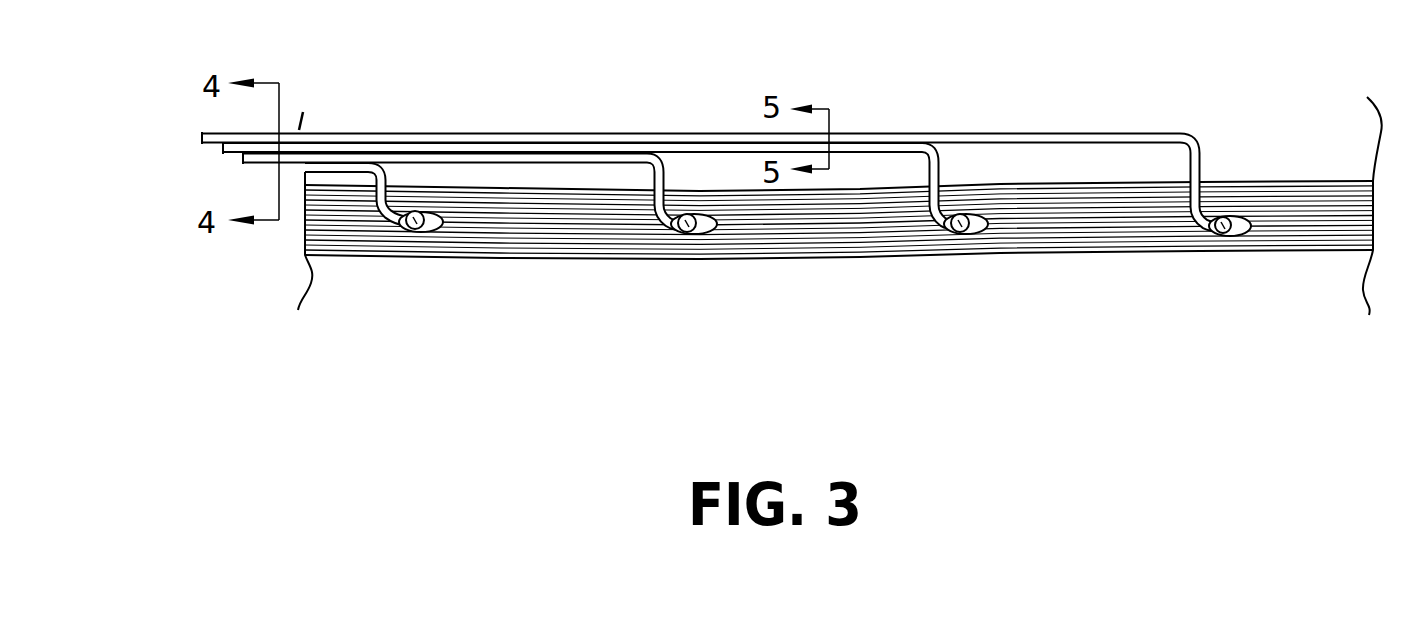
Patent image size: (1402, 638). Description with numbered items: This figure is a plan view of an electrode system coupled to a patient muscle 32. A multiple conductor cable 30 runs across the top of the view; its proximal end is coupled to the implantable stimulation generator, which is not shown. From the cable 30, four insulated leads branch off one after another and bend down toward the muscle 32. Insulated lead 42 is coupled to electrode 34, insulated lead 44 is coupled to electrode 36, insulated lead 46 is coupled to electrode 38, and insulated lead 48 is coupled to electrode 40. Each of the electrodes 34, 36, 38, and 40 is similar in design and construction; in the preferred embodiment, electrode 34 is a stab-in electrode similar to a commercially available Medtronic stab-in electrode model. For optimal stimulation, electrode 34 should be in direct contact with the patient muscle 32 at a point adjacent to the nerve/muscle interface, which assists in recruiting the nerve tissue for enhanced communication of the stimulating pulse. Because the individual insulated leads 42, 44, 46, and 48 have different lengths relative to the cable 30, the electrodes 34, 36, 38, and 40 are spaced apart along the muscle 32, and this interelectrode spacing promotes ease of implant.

The multiple conductor cable 30 is at (988, 89).
The patient muscle 32 is at (1325, 182).
The electrode 34 is at (428, 257).
The electrode 36 is at (693, 233).
The electrode 38 is at (970, 252).
The electrode 40 is at (1232, 248).
The insulated lead 42 is at (262, 173).
The insulated lead 44 is at (417, 158).
The insulated lead 46 is at (688, 148).
The insulated lead 48 is at (1053, 140).